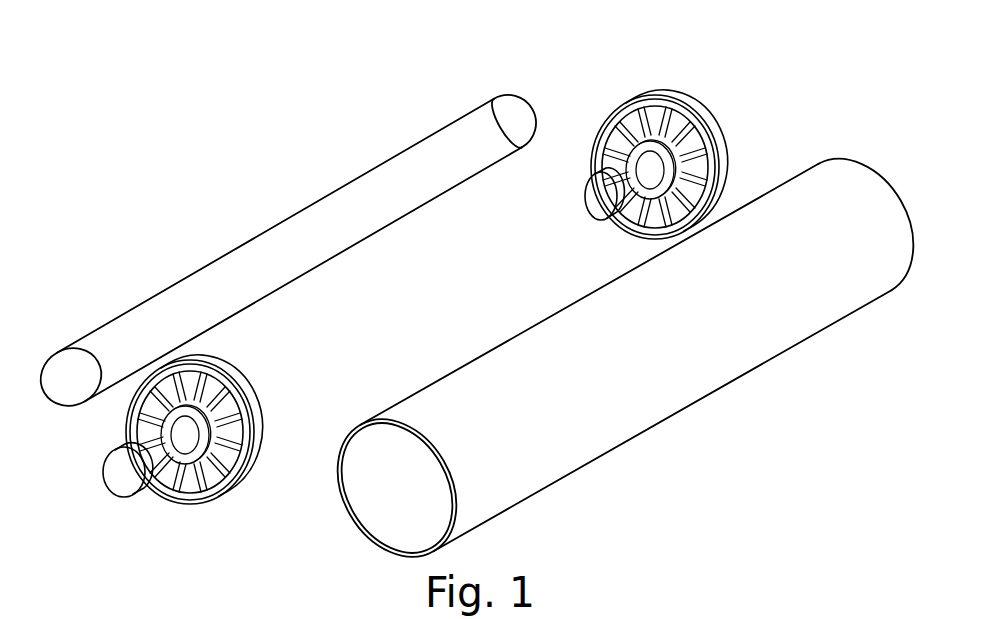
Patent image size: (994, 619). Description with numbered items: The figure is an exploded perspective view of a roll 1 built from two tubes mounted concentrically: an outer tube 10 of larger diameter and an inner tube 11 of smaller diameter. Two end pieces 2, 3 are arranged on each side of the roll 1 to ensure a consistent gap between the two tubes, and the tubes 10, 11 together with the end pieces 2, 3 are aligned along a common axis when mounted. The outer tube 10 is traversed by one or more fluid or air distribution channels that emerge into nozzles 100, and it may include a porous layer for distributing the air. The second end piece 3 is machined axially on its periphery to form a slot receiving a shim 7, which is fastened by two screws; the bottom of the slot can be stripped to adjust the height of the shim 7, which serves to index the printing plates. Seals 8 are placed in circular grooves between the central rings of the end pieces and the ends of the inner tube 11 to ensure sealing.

The roll 1 is at (884, 101).
The end piece 2 is at (705, 112).
The second end piece 3 is at (211, 455).
The shim 7 is at (195, 352).
The seals 8 is at (130, 438).
The outer tube 10 is at (832, 159).
The inner tube 11 is at (507, 95).
The nozzles 100 is at (614, 336).